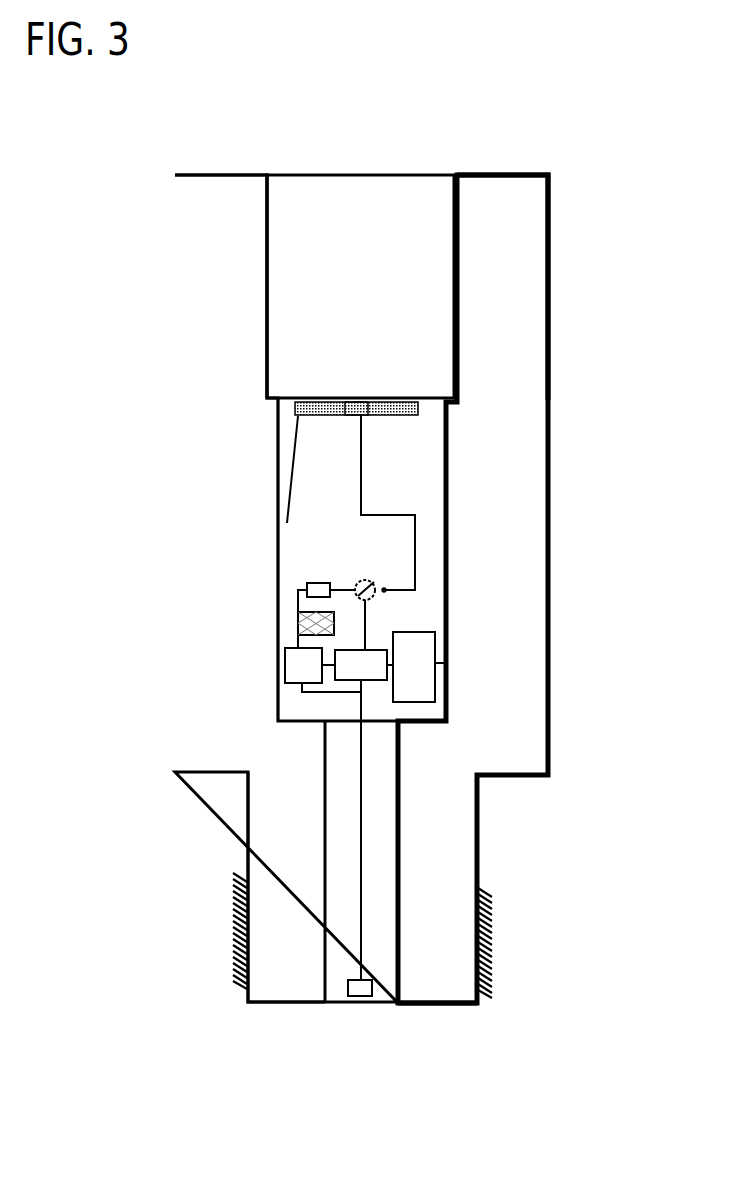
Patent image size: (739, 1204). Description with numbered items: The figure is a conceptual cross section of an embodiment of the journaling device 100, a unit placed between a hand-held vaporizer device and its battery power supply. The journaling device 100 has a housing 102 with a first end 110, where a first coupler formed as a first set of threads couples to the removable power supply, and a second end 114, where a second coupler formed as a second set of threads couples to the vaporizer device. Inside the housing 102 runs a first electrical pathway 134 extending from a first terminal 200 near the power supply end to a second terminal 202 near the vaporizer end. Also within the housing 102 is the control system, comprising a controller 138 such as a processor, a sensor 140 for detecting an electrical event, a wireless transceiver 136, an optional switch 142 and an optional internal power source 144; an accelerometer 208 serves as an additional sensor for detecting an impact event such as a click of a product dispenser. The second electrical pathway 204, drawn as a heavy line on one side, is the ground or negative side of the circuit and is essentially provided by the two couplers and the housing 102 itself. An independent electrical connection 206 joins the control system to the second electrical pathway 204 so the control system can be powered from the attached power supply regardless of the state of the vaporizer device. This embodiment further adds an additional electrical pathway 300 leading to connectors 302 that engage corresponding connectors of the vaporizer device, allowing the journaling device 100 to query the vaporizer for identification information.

The journaling device 100 is at (506, 164).
The housing 102 is at (176, 538).
The first end 110 is at (222, 175).
The second end 114 is at (443, 1007).
The first electrical pathway 134 is at (355, 450).
The wireless transceiver 136 is at (296, 672).
The controller 138 is at (357, 670).
The sensor 140 is at (317, 583).
The switch 142 is at (369, 585).
The internal power source 144 is at (430, 652).
The first terminal 200 is at (373, 416).
The second terminal 202 is at (370, 997).
The second electrical pathway 204 is at (549, 500).
The independent electrical connection 206 is at (441, 668).
The accelerometer 208 is at (300, 624).
The additional electrical pathway 300 is at (292, 477).
The connectors 302 is at (293, 405).